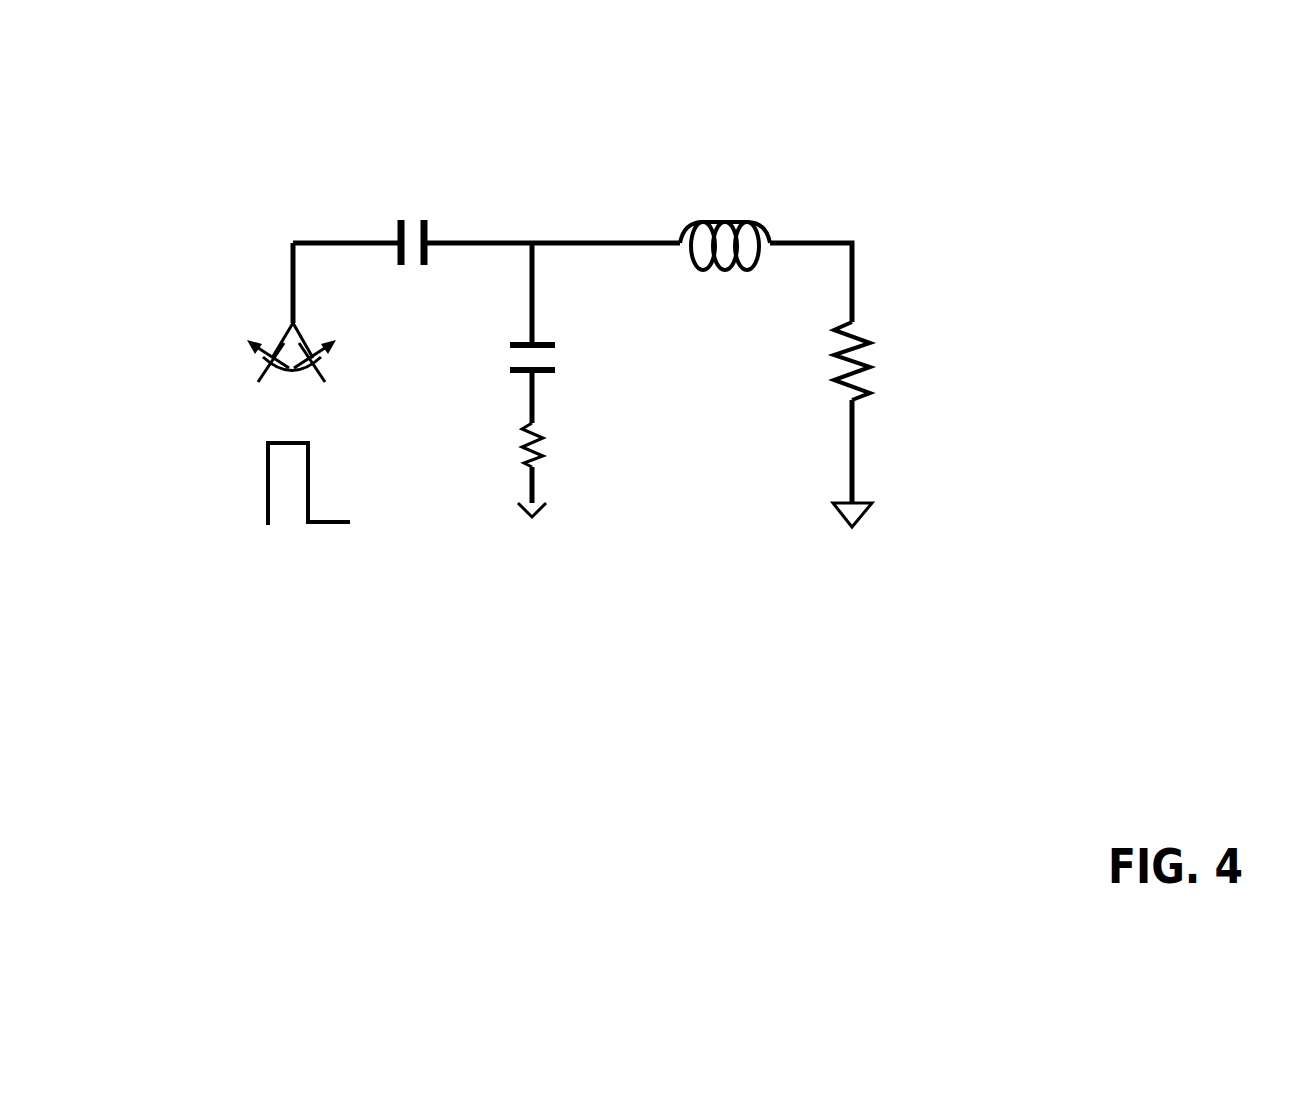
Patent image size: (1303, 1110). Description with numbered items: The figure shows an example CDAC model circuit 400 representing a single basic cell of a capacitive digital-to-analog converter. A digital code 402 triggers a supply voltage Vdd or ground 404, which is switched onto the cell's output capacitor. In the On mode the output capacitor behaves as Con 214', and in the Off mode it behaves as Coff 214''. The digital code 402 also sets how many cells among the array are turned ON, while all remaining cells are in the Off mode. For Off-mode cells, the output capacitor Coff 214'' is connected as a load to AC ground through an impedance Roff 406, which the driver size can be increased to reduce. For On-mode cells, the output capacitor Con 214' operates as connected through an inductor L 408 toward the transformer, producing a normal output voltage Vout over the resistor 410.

The CDAC model circuit 400 is at (1008, 73).
The digital code 402 is at (268, 508).
The supply voltage or ground 404 is at (283, 337).
The Con 214' is at (353, 228).
The Coff 214'' is at (481, 337).
The impedance Roff 406 is at (530, 427).
The inductor L 408 is at (697, 227).
The resistor 410 is at (867, 395).